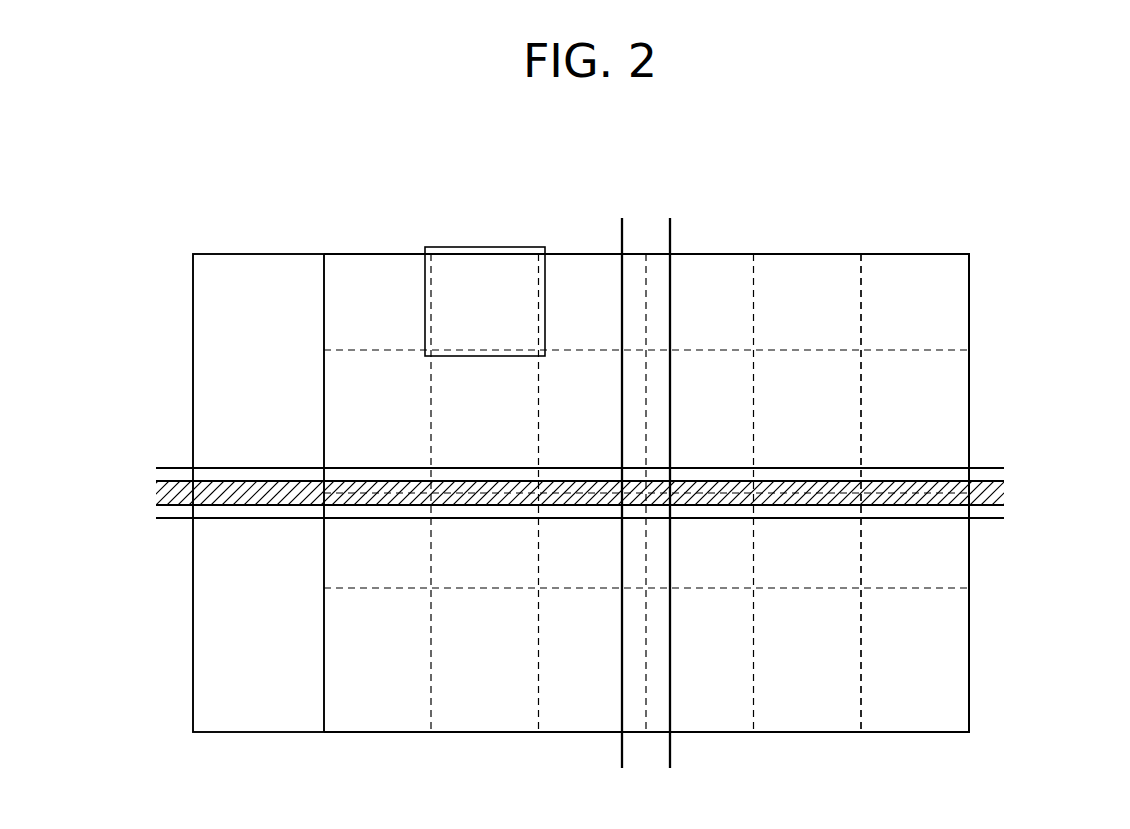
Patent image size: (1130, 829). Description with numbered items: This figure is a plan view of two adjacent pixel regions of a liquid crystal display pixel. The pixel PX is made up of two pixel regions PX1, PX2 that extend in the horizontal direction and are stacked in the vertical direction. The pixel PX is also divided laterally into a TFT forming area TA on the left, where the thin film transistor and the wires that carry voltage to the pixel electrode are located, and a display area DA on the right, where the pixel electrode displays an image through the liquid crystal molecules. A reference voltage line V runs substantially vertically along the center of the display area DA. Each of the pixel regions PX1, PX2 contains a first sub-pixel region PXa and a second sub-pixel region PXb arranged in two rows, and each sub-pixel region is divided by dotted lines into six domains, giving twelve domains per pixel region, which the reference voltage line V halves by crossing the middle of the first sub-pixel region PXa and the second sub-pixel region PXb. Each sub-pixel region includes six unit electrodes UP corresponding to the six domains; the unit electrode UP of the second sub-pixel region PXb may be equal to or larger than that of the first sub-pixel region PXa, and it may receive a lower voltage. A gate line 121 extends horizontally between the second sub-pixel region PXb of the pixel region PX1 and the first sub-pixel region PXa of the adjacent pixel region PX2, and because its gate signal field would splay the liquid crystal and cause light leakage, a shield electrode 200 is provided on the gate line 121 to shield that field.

The gate line 121 is at (167, 492).
The shield electrode 200 is at (178, 518).
The TFT forming area TA is at (257, 254).
The display area DA is at (804, 254).
The unit electrode UP is at (486, 247).
The reference voltage line V is at (670, 237).
The pixel PX is at (930, 200).
The first sub-pixel region PXa is at (1009, 254).
The second sub-pixel region PXb is at (1009, 348).
The first pixel region PX1 is at (1066, 290).
The second pixel region PX2 is at (1066, 530).